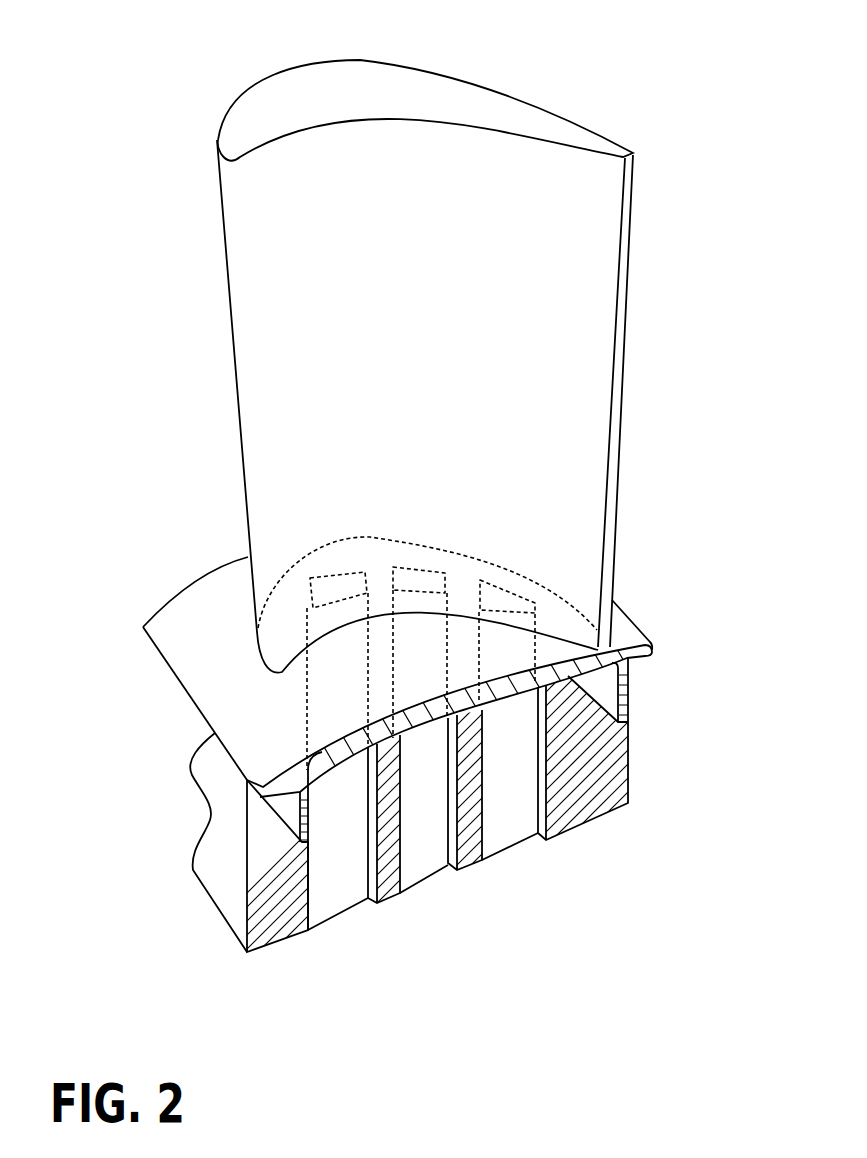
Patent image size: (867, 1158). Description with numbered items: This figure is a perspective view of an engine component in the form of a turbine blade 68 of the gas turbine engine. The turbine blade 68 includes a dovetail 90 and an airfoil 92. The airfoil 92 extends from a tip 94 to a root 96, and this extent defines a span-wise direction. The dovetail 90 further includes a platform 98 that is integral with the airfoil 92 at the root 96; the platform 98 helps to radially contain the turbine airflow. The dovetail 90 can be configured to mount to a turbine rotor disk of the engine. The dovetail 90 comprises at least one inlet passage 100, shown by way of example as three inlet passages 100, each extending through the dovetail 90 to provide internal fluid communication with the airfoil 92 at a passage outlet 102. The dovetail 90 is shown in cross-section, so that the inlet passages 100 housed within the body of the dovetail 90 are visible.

The turbine blade 68 is at (93, 160).
The dovetail 90 is at (238, 828).
The airfoil 92 is at (237, 442).
The tip 94 is at (310, 100).
The root 96 is at (563, 628).
The platform 98 is at (212, 662).
The inlet passage 100 is at (347, 928).
The passage outlet 102 is at (328, 576).